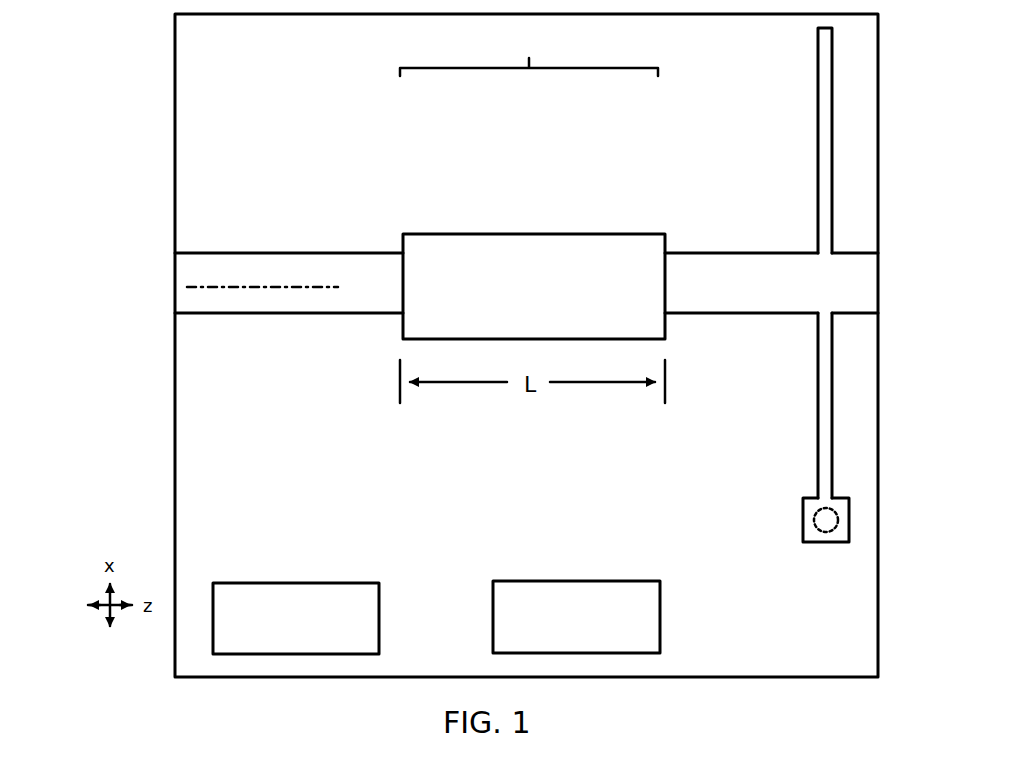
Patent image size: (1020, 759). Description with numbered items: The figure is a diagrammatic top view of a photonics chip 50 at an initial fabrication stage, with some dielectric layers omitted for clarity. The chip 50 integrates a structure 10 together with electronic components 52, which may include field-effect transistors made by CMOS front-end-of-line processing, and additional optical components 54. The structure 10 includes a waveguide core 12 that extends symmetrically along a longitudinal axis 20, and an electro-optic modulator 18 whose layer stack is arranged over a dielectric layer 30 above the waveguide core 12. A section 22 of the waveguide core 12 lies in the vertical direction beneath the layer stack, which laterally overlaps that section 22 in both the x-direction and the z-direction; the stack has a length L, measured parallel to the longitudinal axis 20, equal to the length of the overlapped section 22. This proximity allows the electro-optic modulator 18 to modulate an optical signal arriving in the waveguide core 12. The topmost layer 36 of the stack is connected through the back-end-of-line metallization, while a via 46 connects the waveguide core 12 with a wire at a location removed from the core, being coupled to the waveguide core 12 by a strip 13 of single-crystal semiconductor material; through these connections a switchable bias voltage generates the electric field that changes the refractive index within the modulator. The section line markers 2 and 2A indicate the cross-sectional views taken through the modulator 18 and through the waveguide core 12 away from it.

The photonics chip 50 is at (134, 79).
The structure 10 is at (271, 86).
The waveguide core 12 is at (713, 250).
The longitudinal axis 20 is at (220, 287).
The electro-optic modulator 18 is at (598, 228).
The layer 36 is at (508, 263).
The section 22 is at (529, 52).
The strip 13 is at (827, 459).
The via 46 is at (815, 519).
The dielectric layer 30 is at (200, 473).
The optical components 54 is at (379, 619).
The electronic components 52 is at (660, 614).
The section view 2A indicator 2A is at (313, 112).
The section view 2 indicator 2 is at (514, 112).